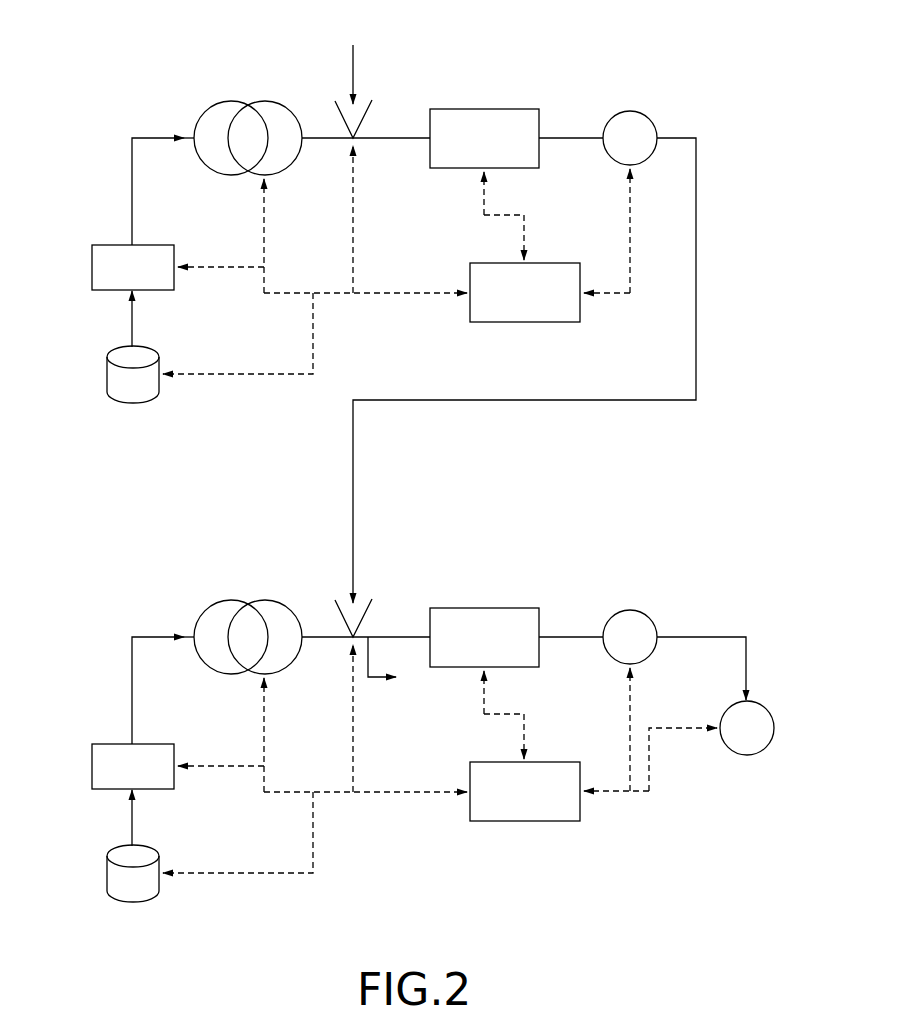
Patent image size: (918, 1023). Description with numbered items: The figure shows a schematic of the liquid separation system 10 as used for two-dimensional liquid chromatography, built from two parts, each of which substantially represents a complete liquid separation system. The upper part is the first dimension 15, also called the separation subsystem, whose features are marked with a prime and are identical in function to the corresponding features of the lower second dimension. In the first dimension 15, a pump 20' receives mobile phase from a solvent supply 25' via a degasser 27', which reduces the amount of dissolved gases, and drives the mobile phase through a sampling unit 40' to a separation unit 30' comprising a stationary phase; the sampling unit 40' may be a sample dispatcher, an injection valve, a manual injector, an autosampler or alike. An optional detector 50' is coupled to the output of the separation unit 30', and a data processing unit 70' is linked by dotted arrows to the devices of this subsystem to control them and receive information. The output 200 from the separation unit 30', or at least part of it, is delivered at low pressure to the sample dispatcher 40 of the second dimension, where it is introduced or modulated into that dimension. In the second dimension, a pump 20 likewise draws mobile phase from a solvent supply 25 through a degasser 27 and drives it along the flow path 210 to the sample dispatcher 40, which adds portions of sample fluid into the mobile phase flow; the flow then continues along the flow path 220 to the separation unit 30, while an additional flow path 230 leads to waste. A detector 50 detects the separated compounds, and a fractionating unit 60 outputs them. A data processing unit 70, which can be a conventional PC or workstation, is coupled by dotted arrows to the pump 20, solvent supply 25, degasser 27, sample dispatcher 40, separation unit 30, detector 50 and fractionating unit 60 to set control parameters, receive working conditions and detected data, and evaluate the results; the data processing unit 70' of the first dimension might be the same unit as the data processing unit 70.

The liquid separation system 10 is at (613, 848).
The first dimension 15 is at (742, 143).
The pump 20 is at (248, 609).
The pump 20' is at (248, 110).
The solvent supply 25 is at (110, 865).
The solvent supply 25' is at (109, 366).
The degasser 27 is at (133, 732).
The degasser 27' is at (133, 234).
The separation unit 30 is at (484, 611).
The separation unit 30' is at (485, 113).
The sample dispatcher 40 is at (365, 662).
The sampling unit 40' is at (367, 163).
The detector 50 is at (640, 612).
The detector 50' is at (643, 114).
The fractionating unit 60 is at (763, 707).
The data processing unit 70 is at (525, 823).
The data processing unit 70' is at (525, 324).
The output 200 is at (550, 370).
The flow path 210 is at (317, 635).
The flow path 220 is at (402, 635).
The flow path to waste 230 is at (403, 671).